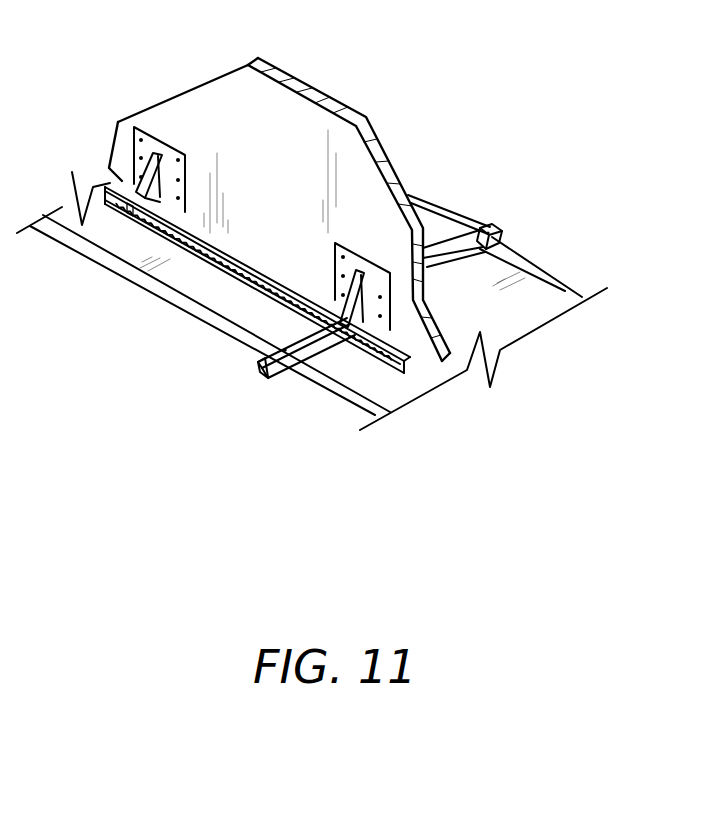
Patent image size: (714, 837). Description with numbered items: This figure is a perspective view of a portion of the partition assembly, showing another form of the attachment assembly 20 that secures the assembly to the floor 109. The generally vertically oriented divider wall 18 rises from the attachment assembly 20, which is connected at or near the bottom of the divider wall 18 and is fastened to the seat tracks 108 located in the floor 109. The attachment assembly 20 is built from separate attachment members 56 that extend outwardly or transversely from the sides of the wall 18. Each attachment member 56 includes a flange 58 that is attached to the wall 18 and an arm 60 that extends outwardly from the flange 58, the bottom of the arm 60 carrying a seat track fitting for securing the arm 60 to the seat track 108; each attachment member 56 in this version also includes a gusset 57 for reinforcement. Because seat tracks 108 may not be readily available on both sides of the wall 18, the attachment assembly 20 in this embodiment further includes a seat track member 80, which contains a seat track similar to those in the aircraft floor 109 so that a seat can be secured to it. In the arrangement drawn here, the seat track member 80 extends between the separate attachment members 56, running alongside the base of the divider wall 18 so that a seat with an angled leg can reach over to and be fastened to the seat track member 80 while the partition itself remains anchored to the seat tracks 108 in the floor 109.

The divider wall 18 is at (290, 80).
The attachment assembly 20 is at (307, 306).
The attachment member 56 is at (316, 345).
The gusset 57 is at (250, 325).
The flange 58 is at (376, 305).
The arm 60 is at (258, 366).
The seat track member 80 is at (114, 183).
The seat track 108 is at (90, 249).
The floor 109 is at (513, 324).